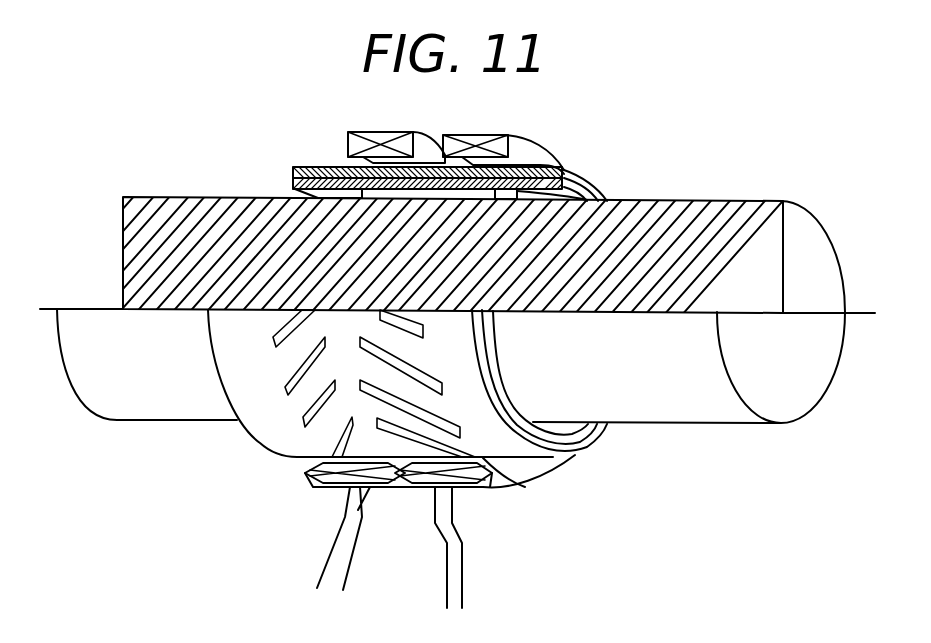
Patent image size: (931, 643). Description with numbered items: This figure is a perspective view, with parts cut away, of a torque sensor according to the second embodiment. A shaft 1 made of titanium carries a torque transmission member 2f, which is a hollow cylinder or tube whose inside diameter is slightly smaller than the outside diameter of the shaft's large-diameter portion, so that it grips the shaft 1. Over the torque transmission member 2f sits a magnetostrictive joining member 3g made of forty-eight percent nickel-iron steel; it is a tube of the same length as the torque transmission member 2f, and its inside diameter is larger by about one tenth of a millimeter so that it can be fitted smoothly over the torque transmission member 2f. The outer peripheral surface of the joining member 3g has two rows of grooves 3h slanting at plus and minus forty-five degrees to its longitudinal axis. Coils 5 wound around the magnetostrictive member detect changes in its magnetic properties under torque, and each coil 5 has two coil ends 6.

The shaft 1 is at (724, 220).
The torque transmission member 2f is at (337, 167).
The joining member 3g is at (530, 167).
The grooves 3h is at (288, 390).
The coils 5 is at (433, 487).
The coil ends 6 is at (323, 565).